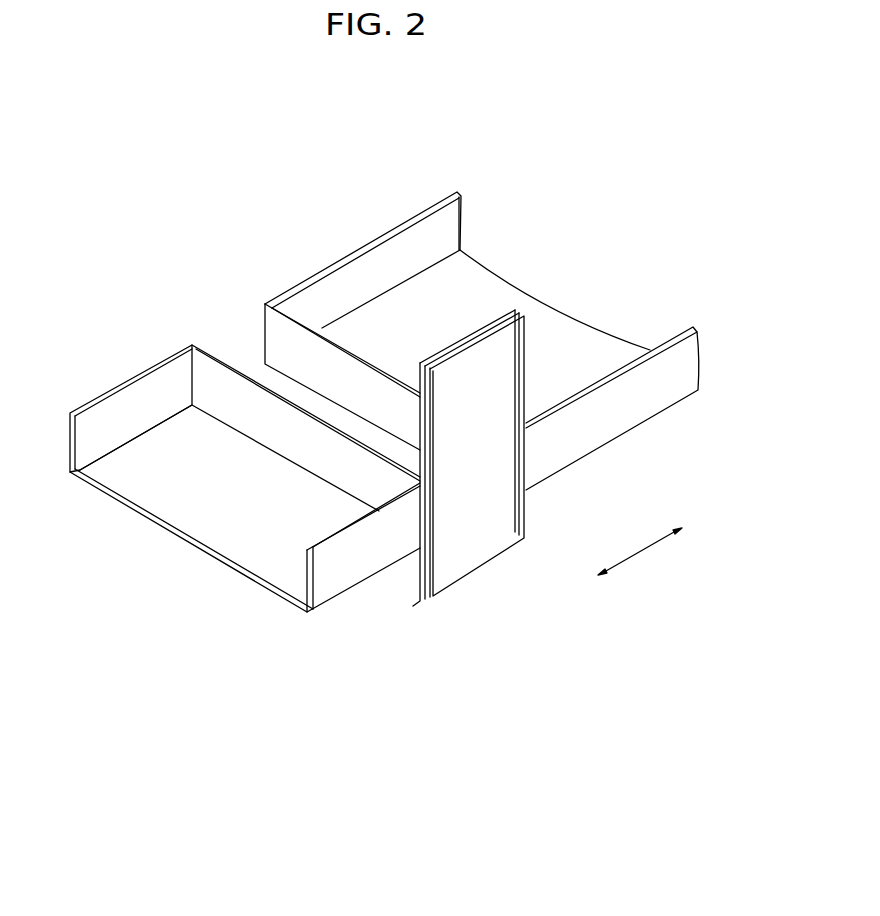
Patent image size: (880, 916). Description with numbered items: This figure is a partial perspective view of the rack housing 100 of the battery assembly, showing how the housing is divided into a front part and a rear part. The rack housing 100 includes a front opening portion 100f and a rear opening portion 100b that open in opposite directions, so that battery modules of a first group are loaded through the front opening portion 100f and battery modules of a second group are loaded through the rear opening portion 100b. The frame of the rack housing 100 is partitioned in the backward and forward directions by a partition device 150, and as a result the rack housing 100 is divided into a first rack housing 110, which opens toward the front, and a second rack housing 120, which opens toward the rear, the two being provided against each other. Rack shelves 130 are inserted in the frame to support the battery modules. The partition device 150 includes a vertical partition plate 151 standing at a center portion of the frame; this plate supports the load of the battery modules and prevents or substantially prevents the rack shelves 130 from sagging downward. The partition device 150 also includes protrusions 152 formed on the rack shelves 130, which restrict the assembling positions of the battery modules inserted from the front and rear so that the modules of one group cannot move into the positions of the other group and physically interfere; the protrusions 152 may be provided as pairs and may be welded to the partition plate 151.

The rack housing 100 is at (181, 313).
The front opening portion 100f is at (166, 554).
The rear opening portion 100b is at (594, 275).
The first rack housing 110 is at (339, 603).
The second rack housing 120 is at (582, 462).
The rack shelf 130 is at (268, 560).
The partition device 150 is at (513, 615).
The partition plate 151 is at (465, 558).
The protrusion 152 is at (273, 340).